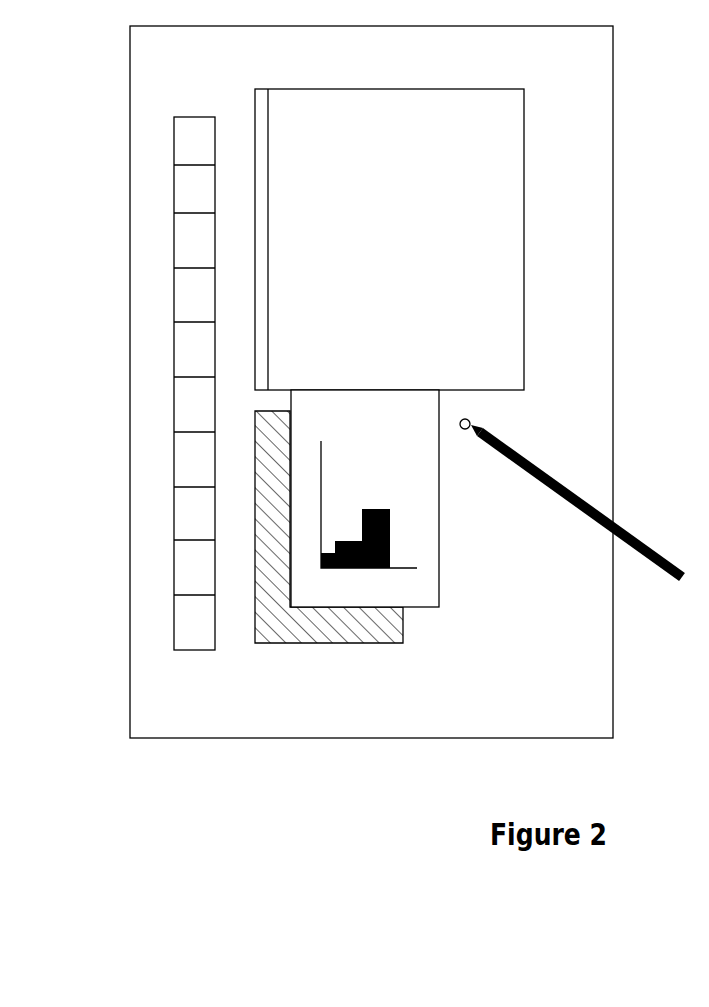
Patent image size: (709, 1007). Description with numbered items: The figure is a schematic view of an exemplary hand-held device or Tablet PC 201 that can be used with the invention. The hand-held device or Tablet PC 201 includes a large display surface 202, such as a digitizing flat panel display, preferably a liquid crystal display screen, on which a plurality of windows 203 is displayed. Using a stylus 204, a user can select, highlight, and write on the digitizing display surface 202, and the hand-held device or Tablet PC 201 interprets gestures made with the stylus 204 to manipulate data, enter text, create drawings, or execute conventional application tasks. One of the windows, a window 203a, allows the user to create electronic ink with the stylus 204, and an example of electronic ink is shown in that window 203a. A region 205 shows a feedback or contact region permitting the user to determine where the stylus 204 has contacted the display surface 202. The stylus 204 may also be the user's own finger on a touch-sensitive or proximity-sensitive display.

The hand-held device or Tablet PC 201 is at (88, 647).
The display surface 202 is at (147, 432).
The windows 203 is at (275, 650).
The window 203a is at (505, 222).
The stylus 204 is at (645, 562).
The region 205 is at (473, 423).